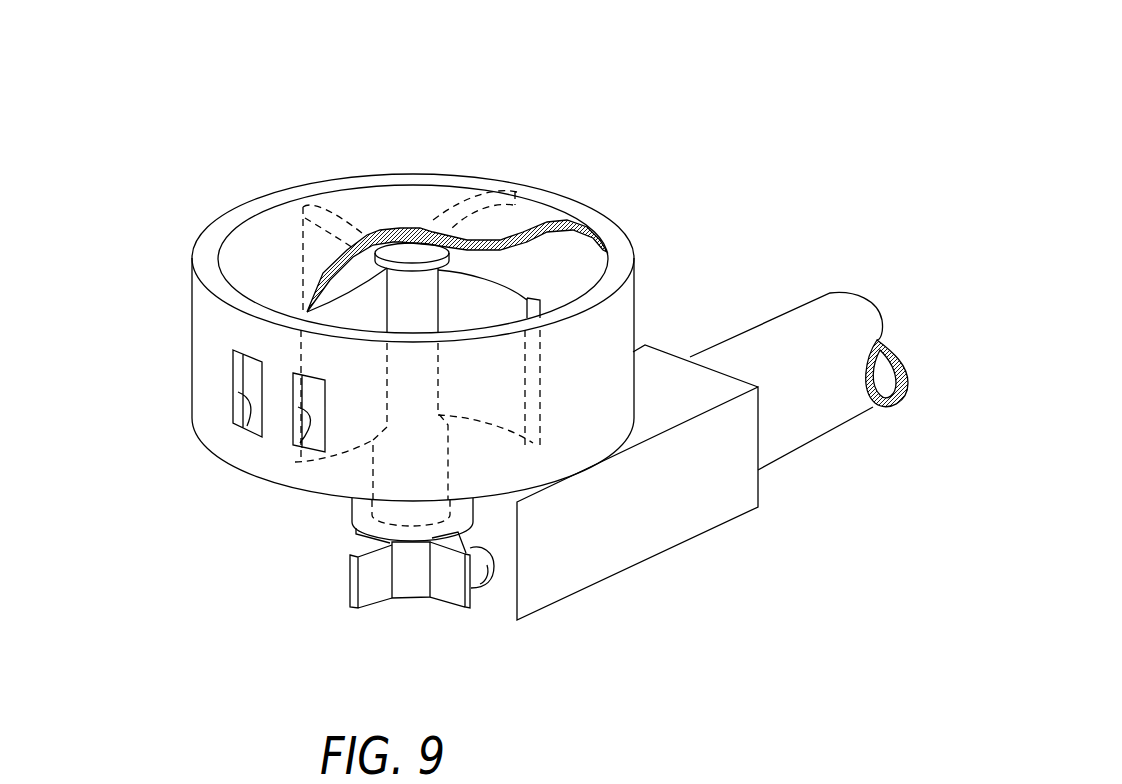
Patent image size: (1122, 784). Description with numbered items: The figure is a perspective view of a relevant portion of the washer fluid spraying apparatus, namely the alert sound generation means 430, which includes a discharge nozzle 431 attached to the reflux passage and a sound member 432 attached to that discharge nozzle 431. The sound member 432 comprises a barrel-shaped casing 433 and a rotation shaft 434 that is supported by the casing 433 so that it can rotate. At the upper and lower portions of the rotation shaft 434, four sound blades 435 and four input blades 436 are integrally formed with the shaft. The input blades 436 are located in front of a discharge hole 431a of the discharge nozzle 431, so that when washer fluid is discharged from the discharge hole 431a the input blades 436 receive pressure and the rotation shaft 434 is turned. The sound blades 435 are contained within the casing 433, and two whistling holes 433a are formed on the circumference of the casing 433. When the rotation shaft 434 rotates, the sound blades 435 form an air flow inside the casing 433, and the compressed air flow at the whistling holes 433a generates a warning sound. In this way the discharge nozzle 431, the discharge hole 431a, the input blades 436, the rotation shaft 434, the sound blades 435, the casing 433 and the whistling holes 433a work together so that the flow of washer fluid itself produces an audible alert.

The alert sound generation means 430 is at (663, 243).
The discharge nozzle 431 is at (687, 543).
The discharge hole 431a is at (479, 584).
The sound member 432 is at (462, 172).
The casing 433 is at (188, 313).
The whistling holes 433a is at (293, 443).
The rotation shaft 434 is at (412, 244).
The sound blades 435 is at (357, 293).
The input blades 436 is at (453, 587).